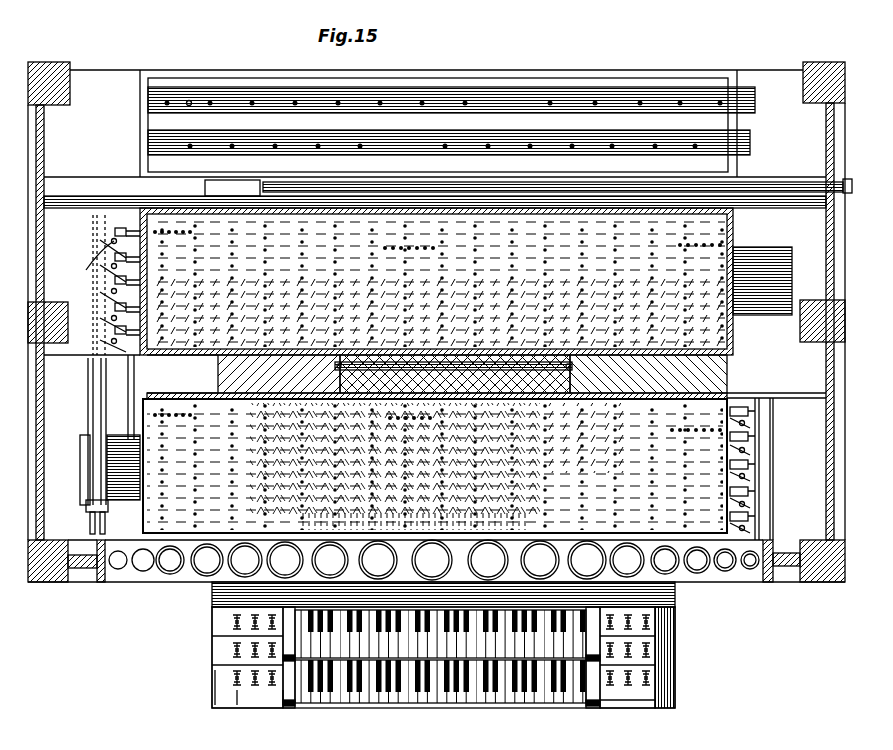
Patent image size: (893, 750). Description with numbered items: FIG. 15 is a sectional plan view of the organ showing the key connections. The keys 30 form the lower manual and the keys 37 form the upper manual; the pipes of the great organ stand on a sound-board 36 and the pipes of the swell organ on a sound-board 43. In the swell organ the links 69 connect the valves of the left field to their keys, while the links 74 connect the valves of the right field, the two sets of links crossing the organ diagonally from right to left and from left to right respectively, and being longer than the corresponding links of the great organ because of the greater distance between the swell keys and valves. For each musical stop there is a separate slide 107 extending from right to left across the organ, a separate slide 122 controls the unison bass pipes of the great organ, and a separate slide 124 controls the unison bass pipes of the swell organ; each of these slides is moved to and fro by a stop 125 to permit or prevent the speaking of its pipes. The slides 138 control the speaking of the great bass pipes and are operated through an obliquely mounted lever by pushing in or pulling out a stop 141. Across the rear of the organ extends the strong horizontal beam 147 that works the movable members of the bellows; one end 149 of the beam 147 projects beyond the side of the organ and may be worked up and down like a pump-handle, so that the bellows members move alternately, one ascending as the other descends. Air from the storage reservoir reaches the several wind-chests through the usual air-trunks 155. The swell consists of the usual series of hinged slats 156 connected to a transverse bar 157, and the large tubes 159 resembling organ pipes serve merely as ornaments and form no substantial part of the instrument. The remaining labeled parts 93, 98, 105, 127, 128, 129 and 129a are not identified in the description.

The keys 30 is at (475, 690).
The sound-board 36 is at (435, 466).
The keys 37 is at (392, 655).
The sound-board 43 is at (436, 281).
The links 69 is at (240, 378).
The links 74 is at (655, 390).
The stop action 93 is at (243, 694).
The stop rod 98 is at (213, 687).
The stop lever 105 is at (278, 694).
The slide 107 is at (733, 330).
The slide 122 is at (688, 419).
The slide 124 is at (130, 226).
The stop 125 is at (255, 640).
The lever 127 is at (114, 341).
The rods 128 is at (90, 422).
The pneumatics 129 is at (113, 240).
The rod 129a is at (130, 370).
The slides 138 is at (480, 102).
The stop 141 is at (627, 694).
The beam 147 is at (455, 185).
The end of beam 149 is at (845, 182).
The air-trunks 155 is at (660, 174).
The hinged slats 156 is at (540, 362).
The transverse bar 157 is at (533, 374).
The large tubes 159 is at (434, 560).